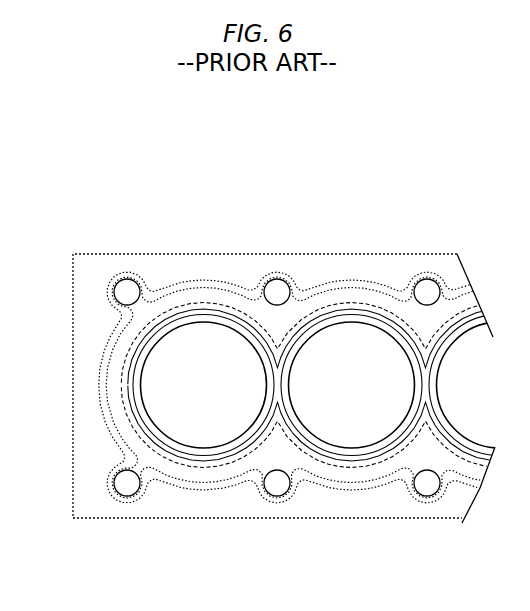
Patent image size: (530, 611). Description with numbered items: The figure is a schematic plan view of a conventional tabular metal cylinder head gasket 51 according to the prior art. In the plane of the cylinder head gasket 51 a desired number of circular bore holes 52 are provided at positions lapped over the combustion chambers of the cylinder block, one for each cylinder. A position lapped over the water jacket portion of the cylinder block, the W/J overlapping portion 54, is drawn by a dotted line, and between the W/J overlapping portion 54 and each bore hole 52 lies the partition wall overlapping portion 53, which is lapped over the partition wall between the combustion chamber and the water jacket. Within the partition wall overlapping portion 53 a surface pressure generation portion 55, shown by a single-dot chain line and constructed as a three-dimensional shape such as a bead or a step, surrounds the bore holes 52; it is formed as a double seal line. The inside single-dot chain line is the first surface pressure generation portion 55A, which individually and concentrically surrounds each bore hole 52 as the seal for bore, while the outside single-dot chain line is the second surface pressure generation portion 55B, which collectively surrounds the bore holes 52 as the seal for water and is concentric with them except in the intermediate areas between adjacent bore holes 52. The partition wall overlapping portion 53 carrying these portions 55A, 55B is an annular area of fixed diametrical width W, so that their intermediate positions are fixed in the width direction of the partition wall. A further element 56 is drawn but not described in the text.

The cylinder head gasket 51 is at (397, 239).
The bore hole 52 is at (216, 392).
The partition wall overlapping portion 53 is at (105, 354).
The W/J overlapping portion 54 is at (112, 341).
The surface pressure generation portion 55 is at (325, 383).
The first surface pressure generation portion 55A is at (177, 463).
The second surface pressure generation portion 55B is at (216, 473).
The outer band / bolt hole region 56 is at (273, 339).
The diametrical width W is at (185, 385).